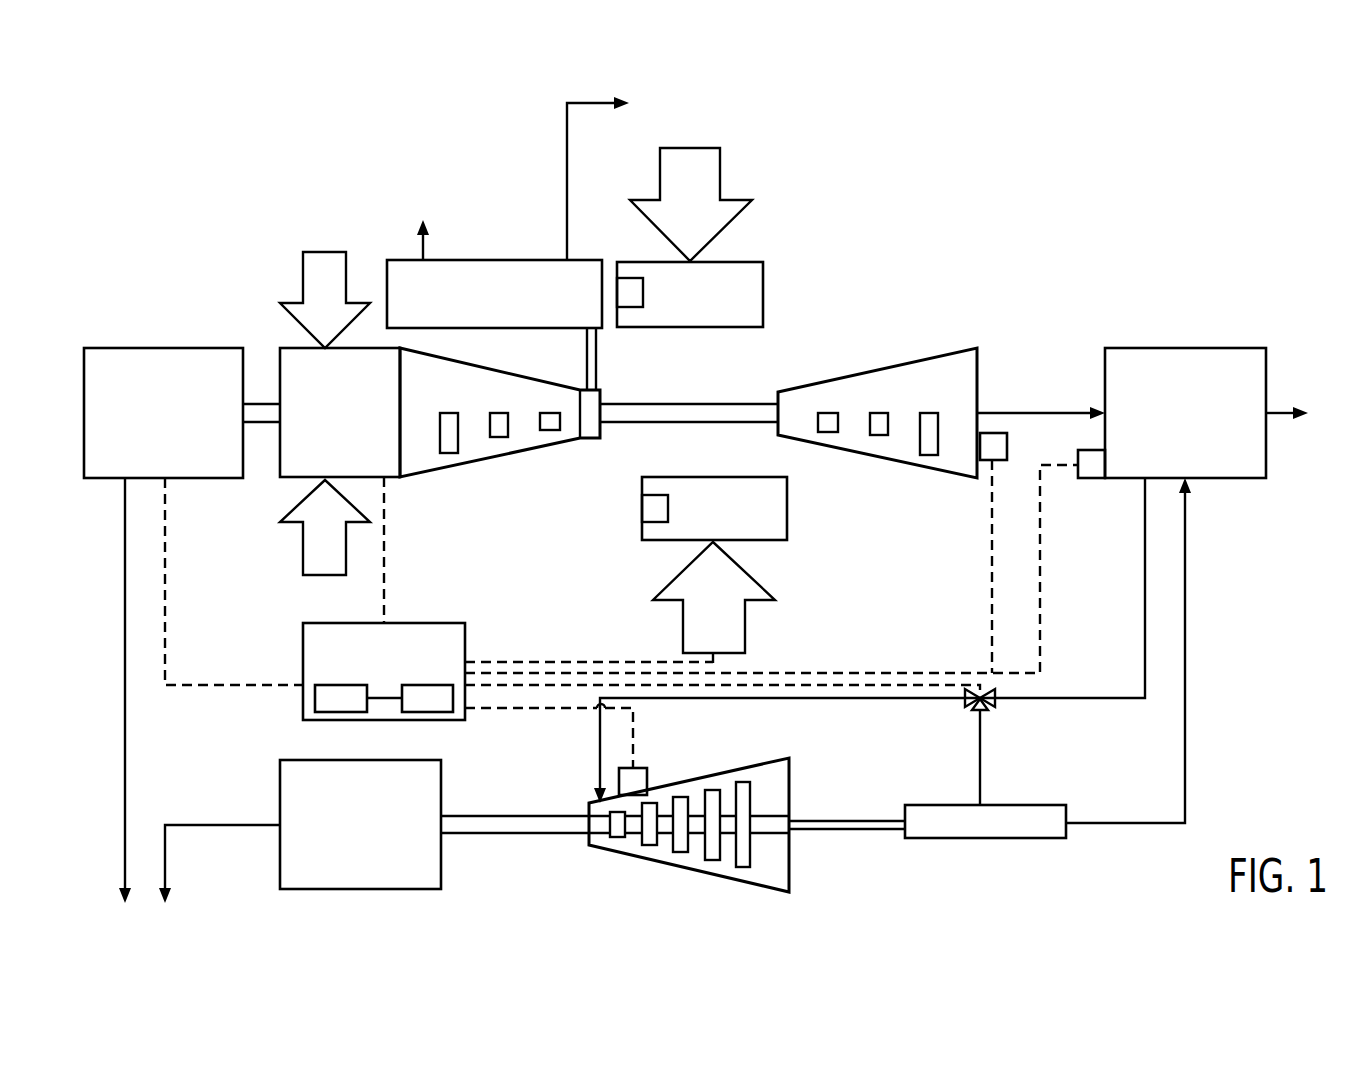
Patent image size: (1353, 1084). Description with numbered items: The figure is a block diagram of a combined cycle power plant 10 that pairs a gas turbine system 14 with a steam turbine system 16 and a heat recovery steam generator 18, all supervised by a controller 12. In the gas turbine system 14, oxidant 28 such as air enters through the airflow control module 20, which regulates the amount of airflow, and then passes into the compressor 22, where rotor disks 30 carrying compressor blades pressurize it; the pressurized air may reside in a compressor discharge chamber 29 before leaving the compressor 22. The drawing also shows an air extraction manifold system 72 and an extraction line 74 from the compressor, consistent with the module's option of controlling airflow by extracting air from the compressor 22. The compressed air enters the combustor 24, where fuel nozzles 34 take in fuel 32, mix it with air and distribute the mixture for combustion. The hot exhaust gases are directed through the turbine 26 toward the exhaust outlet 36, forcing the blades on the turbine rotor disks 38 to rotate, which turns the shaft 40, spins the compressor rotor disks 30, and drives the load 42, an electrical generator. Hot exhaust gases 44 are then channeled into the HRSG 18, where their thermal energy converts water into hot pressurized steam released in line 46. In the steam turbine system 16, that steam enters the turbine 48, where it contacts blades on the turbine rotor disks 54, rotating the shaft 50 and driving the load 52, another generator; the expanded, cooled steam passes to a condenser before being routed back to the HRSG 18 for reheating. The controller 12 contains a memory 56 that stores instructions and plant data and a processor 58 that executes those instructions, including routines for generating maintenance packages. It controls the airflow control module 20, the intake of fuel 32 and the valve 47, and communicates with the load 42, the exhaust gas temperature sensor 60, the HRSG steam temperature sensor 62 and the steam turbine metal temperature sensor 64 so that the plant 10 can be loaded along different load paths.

The combined cycle power plant 10 is at (1040, 226).
The controller 12 is at (621, 614).
The gas turbine system 14 is at (360, 254).
The steam turbine system 16 is at (866, 879).
The heat recovery steam generator 18 is at (1185, 348).
The airflow control module 20 is at (305, 348).
The compressor 22 is at (500, 443).
The combustor 24 is at (719, 391).
The turbine 26 is at (877, 404).
The oxidant 28 is at (303, 277).
The compressor discharge chamber 29 is at (593, 438).
The rotor disks 30 is at (448, 454).
The fuel 32 is at (660, 174).
The fuel nozzles 34 is at (643, 293).
The exhaust outlet 36 is at (978, 370).
The turbine rotor disks 38 is at (929, 455).
The shaft 40 is at (263, 423).
The load 42 is at (165, 348).
The hot exhaust gases 44 is at (1067, 413).
The line 46 is at (875, 698).
The valve 47 is at (993, 700).
The turbine 48 is at (689, 818).
The shaft 50 is at (523, 835).
The load 52 is at (280, 857).
The turbine rotor disks 54 is at (617, 837).
The memory 56 is at (340, 713).
The processor 58 is at (428, 713).
The exhaust gas temperature sensor 60 is at (1007, 445).
The HRSG steam temperature sensor 62 is at (1093, 480).
The steam turbine metal temperature sensor 64 is at (647, 780).
The air extraction manifold system 72 is at (472, 260).
The extraction line 74 is at (587, 352).